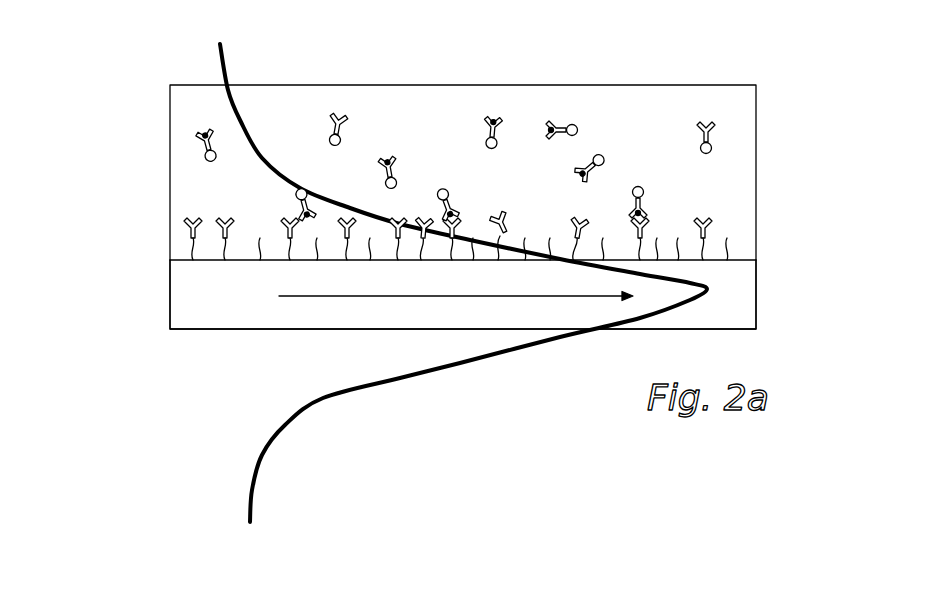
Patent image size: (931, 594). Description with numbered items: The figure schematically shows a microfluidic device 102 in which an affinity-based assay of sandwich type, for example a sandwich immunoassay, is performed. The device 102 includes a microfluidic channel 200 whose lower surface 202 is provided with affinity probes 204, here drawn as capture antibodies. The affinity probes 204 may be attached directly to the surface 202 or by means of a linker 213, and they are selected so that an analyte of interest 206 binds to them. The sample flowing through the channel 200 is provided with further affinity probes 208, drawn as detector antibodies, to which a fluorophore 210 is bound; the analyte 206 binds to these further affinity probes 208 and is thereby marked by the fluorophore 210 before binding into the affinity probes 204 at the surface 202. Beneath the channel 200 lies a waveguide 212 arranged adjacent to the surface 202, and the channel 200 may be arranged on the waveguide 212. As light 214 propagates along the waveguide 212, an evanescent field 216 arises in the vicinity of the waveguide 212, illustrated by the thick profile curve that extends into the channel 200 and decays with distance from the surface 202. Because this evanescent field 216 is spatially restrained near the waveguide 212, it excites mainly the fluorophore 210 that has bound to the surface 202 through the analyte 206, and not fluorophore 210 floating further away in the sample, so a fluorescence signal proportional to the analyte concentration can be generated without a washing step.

The microfluidic device 102 is at (638, 85).
The microfluidic channel 200 is at (284, 120).
The surface 202 is at (182, 259).
The affinity probes 204 is at (510, 220).
The analyte of interest 206 is at (390, 149).
The further affinity probes 208 is at (482, 119).
The fluorophore 210 is at (199, 158).
The waveguide 212 is at (183, 287).
The linker 213 is at (706, 236).
The light 214 is at (320, 298).
The evanescent field 216 is at (228, 72).